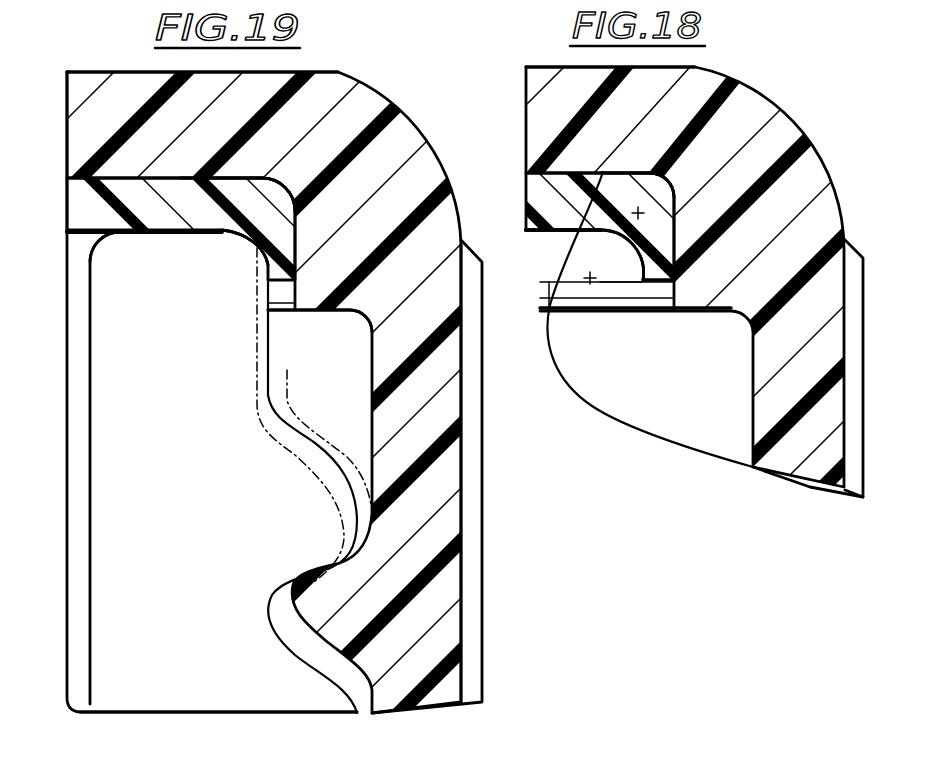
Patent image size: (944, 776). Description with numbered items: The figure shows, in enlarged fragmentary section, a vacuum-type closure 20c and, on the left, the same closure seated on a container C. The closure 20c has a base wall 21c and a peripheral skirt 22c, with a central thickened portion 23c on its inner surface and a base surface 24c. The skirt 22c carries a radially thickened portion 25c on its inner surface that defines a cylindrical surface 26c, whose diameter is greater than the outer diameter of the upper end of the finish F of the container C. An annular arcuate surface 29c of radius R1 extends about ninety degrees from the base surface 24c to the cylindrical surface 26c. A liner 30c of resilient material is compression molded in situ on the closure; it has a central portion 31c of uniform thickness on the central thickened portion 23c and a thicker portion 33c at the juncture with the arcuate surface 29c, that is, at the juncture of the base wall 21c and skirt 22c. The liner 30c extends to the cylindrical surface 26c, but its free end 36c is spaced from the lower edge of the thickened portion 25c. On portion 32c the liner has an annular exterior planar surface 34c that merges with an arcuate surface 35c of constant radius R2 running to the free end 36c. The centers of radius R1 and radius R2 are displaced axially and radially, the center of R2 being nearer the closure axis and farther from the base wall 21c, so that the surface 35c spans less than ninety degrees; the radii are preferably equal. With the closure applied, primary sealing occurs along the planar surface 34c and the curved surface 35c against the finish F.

In FIG. 19, the closure 20c is at (419, 112).
In FIG. 18, the closure 20c is at (801, 104).
In FIG. 19, the base wall 21c is at (112, 70).
In FIG. 18, the base wall 21c is at (535, 68).
In FIG. 19, the peripheral skirt 22c is at (445, 477).
In FIG. 18, the peripheral skirt 22c is at (823, 295).
In FIG. 19, the central thickened portion 23c is at (90, 132).
In FIG. 18, the central thickened portion 23c is at (545, 125).
In FIG. 19, the base surface 24c is at (100, 193).
In FIG. 18, the base surface 24c is at (535, 195).
In FIG. 19, the radially thickened portion 25c is at (318, 300).
In FIG. 18, the radially thickened portion 25c is at (697, 300).
In FIG. 19, the cylindrical surface 26c is at (247, 244).
In FIG. 18, the cylindrical surface 26c is at (654, 298).
In FIG. 19, the annular arcuate surface 29c is at (282, 182).
In FIG. 18, the annular arcuate surface 29c is at (677, 185).
In FIG. 19, the liner 30c is at (85, 256).
In FIG. 18, the liner 30c is at (560, 272).
In FIG. 19, the central portion 31c is at (95, 212).
In FIG. 18, the central portion 31c is at (548, 205).
In FIG. 19, the portion of the liner 32c is at (160, 212).
In FIG. 18, the portion of the liner 32c is at (552, 333).
In FIG. 19, the thicker portion 33c is at (229, 153).
In FIG. 18, the thicker portion 33c is at (640, 173).
In FIG. 19, the annular exterior planar surface 34c is at (92, 240).
In FIG. 18, the annular exterior planar surface 34c is at (558, 233).
In FIG. 19, the arcuate surface 35c is at (254, 271).
In FIG. 18, the arcuate surface 35c is at (608, 292).
In FIG. 19, the free end 36c is at (265, 330).
In FIG. 18, the free end 36c is at (680, 268).
In FIG. 18, the radius R1 is at (664, 190).
In FIG. 18, the radius R2 is at (632, 248).
In FIG. 19, the finish F is at (182, 442).
In FIG. 19, the container C is at (238, 702).